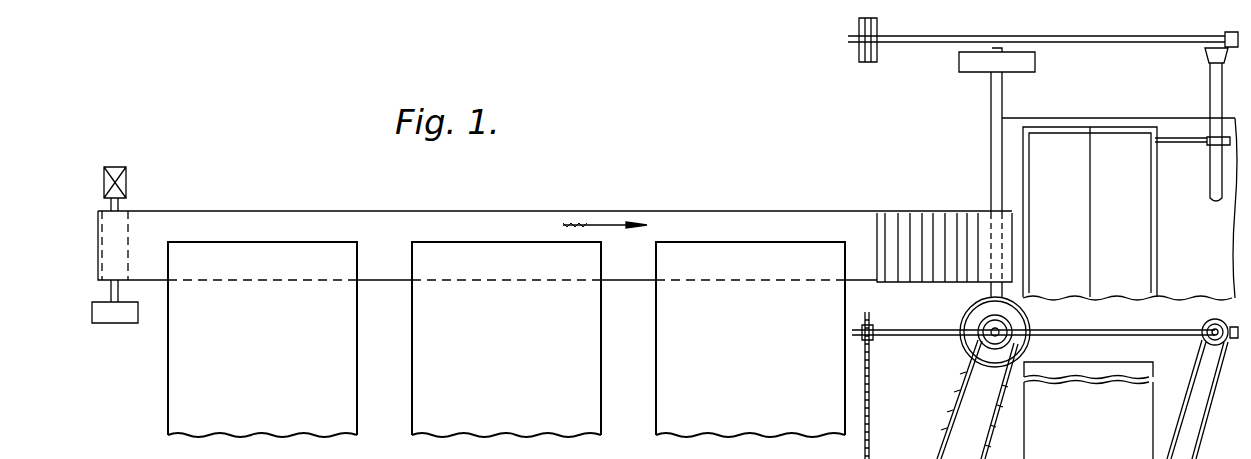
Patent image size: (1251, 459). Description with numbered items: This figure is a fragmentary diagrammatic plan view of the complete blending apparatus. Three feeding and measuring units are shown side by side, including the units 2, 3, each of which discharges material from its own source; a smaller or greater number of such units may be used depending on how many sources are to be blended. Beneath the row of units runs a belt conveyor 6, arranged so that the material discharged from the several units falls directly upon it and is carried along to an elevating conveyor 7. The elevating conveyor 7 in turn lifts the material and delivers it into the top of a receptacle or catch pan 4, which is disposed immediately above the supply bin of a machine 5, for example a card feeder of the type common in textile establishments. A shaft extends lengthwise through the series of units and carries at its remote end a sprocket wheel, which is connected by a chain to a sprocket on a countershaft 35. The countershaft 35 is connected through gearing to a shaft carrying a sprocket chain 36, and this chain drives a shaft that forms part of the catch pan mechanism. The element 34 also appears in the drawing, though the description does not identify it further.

The feeding and measuring unit 2 is at (432, 378).
The feeding and measuring unit 3 is at (672, 386).
The catch pan 4 is at (1119, 209).
The machine 5 is at (1040, 430).
The belt conveyor 6 is at (382, 232).
The elevating conveyor 7 is at (933, 226).
The support 34 is at (805, 449).
The countershaft 35 is at (920, 42).
The sprocket chain 36 is at (1202, 420).